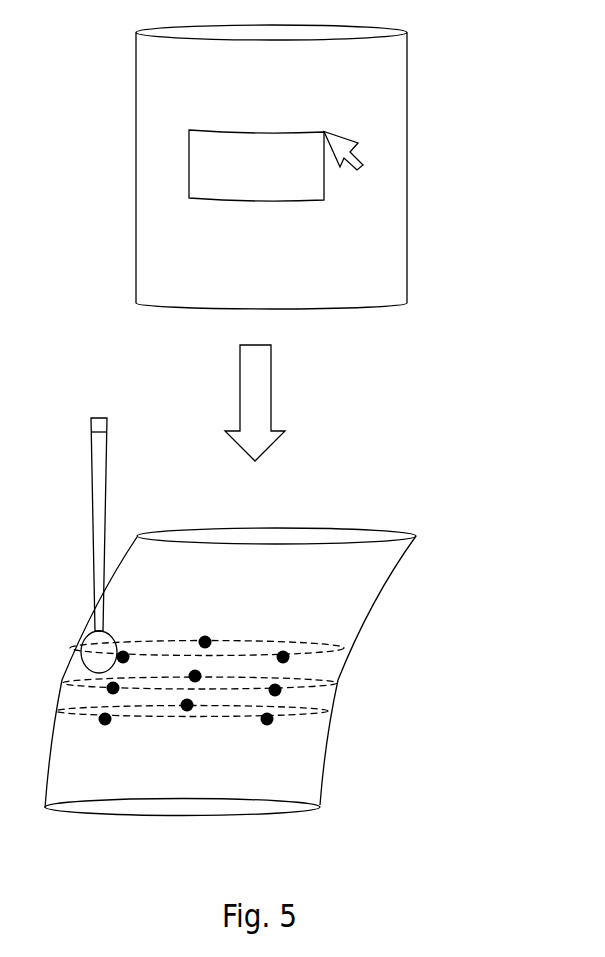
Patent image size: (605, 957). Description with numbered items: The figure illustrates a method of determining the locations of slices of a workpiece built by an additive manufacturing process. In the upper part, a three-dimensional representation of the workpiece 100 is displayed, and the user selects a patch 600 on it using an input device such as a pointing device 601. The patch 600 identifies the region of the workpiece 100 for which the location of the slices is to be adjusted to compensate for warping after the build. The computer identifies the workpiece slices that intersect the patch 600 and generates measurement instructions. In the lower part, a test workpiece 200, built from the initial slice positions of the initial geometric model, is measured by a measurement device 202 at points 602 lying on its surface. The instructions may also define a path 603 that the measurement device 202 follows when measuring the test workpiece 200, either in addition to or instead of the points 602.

The workpiece 100 is at (415, 58).
The patch 600 is at (324, 188).
The pointing device 601 is at (363, 153).
The test workpiece 200 is at (374, 530).
The measurement device 202 is at (98, 475).
The path 603 is at (345, 642).
The points 602 is at (276, 727).